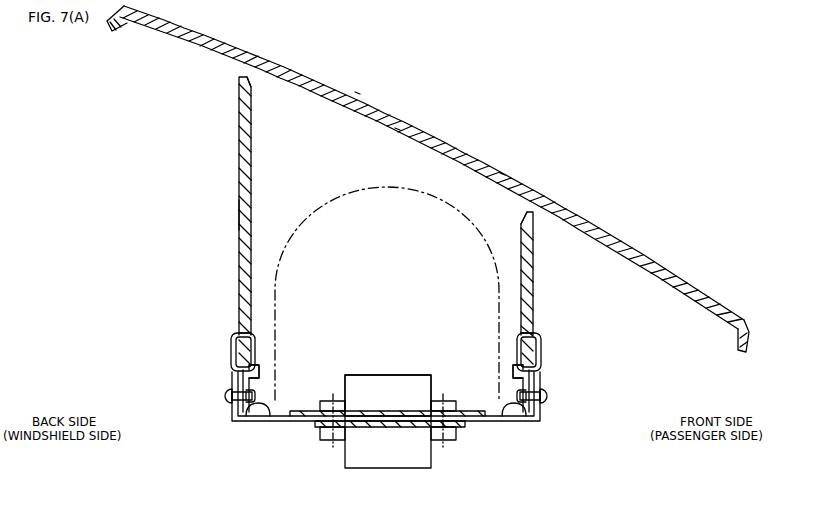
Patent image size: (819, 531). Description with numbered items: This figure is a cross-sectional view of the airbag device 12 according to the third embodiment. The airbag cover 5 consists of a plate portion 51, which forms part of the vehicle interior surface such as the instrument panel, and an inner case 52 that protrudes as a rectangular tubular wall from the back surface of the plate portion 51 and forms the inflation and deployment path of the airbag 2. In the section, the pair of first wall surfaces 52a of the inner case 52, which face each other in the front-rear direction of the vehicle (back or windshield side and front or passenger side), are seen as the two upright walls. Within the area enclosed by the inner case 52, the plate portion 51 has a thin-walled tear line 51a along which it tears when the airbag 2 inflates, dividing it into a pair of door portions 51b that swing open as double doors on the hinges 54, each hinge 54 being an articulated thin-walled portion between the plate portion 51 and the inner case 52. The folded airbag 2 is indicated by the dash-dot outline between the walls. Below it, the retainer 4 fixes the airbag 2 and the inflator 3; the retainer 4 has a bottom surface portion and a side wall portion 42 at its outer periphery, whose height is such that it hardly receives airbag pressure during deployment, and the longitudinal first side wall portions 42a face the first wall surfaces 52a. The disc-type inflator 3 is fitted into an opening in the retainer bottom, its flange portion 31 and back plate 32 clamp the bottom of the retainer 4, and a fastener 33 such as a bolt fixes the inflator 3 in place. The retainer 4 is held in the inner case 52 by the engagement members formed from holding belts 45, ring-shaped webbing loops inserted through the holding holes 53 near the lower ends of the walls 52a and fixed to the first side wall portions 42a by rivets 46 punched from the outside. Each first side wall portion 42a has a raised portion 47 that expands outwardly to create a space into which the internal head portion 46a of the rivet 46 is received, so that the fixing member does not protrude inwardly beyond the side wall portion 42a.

The airbag 2 is at (330, 204).
The inflator 3 is at (388, 468).
The retainer 4 is at (250, 423).
The airbag cover 5 is at (142, 72).
The airbag device 12 is at (484, 82).
The flange portion 31 is at (388, 428).
The back plate 32 is at (388, 411).
The fastener 33 is at (332, 441).
The side wall portion 42 is at (259, 371).
The first side wall portion 42a is at (386, 371).
The holding belt 45 is at (232, 353).
The rivet 46 is at (225, 396).
The internal head portion 46a is at (249, 396).
The raised portion 47 is at (268, 422).
The plate portion 51 is at (236, 48).
The tear line 51a is at (395, 128).
The door portions 51b is at (342, 104).
The inner case 52 is at (212, 156).
The first wall surfaces 52a is at (239, 214).
The holding hole 53 is at (240, 329).
The hinge 54 is at (239, 84).